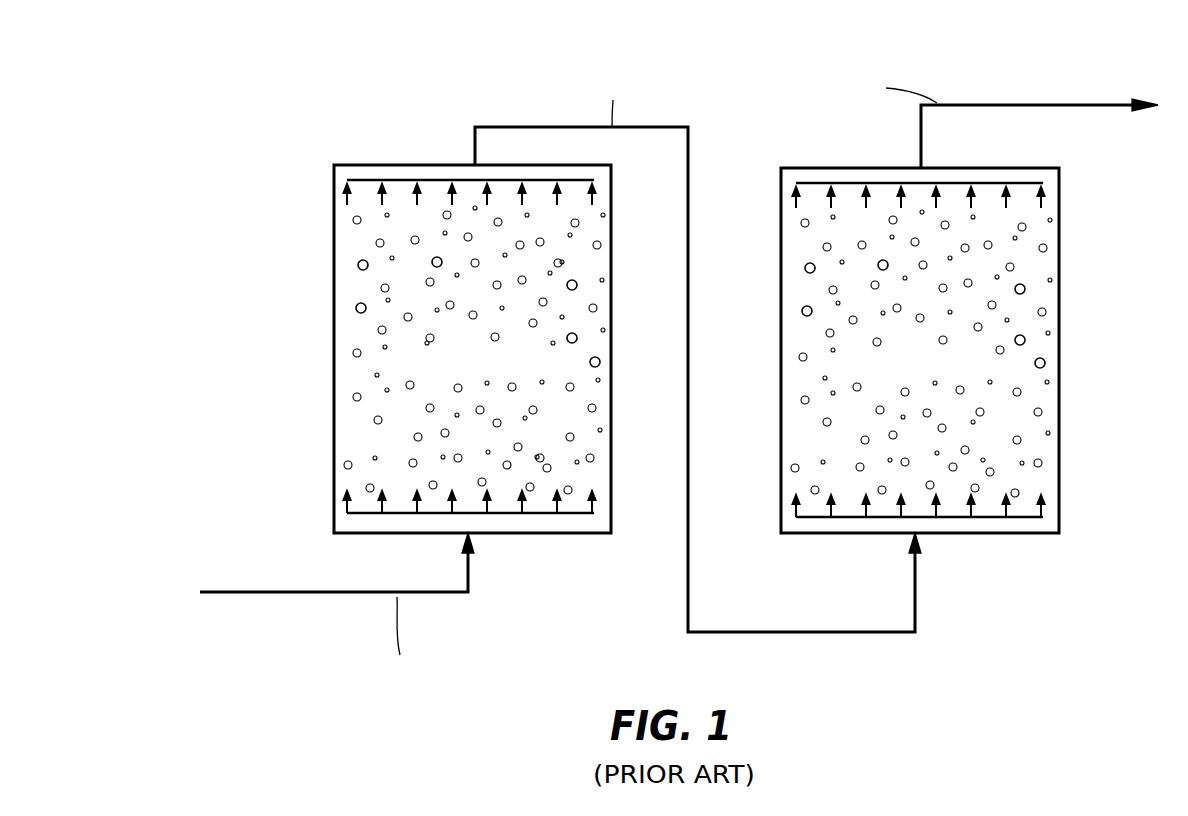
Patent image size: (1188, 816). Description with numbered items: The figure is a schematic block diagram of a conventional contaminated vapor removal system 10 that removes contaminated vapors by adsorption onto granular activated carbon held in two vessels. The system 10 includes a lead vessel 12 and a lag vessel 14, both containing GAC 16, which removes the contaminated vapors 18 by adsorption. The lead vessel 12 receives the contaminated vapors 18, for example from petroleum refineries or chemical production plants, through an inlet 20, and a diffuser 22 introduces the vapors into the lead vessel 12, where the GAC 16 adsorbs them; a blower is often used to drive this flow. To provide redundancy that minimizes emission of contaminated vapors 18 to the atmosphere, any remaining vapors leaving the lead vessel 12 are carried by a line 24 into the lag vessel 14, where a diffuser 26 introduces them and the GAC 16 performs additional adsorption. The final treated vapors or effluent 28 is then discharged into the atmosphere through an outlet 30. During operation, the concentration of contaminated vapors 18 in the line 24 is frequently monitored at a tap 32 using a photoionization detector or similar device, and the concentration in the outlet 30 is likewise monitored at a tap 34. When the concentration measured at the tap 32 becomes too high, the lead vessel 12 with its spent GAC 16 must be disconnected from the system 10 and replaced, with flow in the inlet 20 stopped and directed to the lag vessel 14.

The contaminated vapor removal system 10 is at (746, 49).
The lead vessel 12 is at (334, 440).
The lag vessel 14 is at (781, 443).
The GAC 16 is at (432, 263).
The contaminated vapors 18 is at (333, 592).
The inlet 20 is at (445, 597).
The diffuser 22 is at (572, 513).
The line 24 is at (503, 127).
The diffuser 26 is at (1020, 518).
The treated vapors 28 is at (1073, 40).
The outlet 30 is at (990, 106).
The tap 32 is at (634, 78).
The tap 34 is at (868, 62).